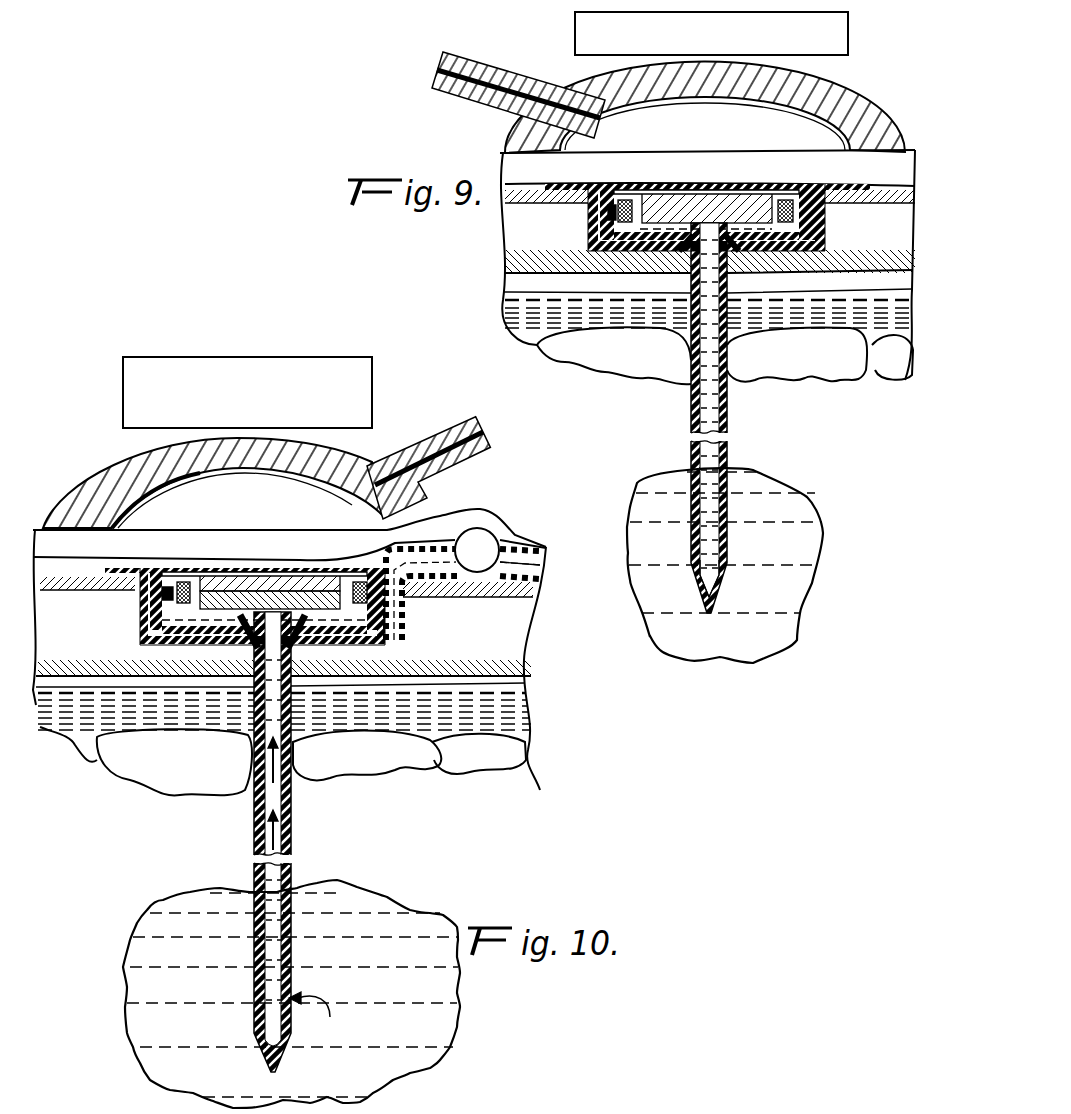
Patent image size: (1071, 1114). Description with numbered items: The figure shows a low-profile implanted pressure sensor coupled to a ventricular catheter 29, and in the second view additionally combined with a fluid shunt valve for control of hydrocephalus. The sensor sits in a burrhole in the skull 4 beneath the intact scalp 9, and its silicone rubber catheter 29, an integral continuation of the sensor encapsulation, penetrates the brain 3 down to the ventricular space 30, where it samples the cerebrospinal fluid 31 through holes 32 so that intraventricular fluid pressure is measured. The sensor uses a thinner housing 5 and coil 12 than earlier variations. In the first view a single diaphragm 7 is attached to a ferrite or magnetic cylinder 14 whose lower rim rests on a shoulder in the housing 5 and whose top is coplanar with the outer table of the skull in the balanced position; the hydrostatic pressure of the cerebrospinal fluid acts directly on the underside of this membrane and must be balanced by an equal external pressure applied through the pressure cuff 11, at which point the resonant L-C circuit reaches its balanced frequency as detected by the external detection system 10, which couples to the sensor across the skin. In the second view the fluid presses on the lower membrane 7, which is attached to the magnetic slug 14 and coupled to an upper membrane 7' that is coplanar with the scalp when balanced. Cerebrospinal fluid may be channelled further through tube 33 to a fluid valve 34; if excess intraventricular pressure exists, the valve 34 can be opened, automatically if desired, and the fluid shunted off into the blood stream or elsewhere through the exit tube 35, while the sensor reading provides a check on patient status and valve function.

In FIG. 9, the brain 3 is at (840, 363).
In FIG. 9, the skull 4 is at (522, 239).
In FIG. 9, the housing 5 is at (604, 183).
In FIG. 9, the inner flexible diaphragm 7 is at (706, 155).
In FIG. 10, the inner flexible diaphragm 7 is at (240, 606).
In FIG. 10, the outer flexible diaphragm 7' is at (264, 536).
In FIG. 9, the scalp 9 is at (802, 165).
In FIG. 9, the external detection system 10 is at (575, 43).
In FIG. 10, the external detection system 10 is at (124, 372).
In FIG. 9, the pressure cuff 11 is at (832, 101).
In FIG. 10, the pressure cuff 11 is at (93, 488).
In FIG. 9, the coil 12 is at (806, 216).
In FIG. 9, the magnetic cylinder 14 is at (707, 197).
In FIG. 10, the magnetic cylinder 14 is at (257, 566).
In FIG. 9, the ventricular catheter 29 is at (730, 404).
In FIG. 10, the ventricular catheter 29 is at (293, 826).
In FIG. 9, the ventricular space 30 is at (797, 647).
In FIG. 10, the ventricular space 30 is at (410, 910).
In FIG. 9, the cerebrospinal fluid 31 is at (780, 590).
In FIG. 9, the holes 32 is at (723, 548).
In FIG. 10, the tube 33 is at (434, 581).
In FIG. 10, the fluid valve 34 is at (488, 530).
In FIG. 10, the exit tube 35 is at (522, 556).